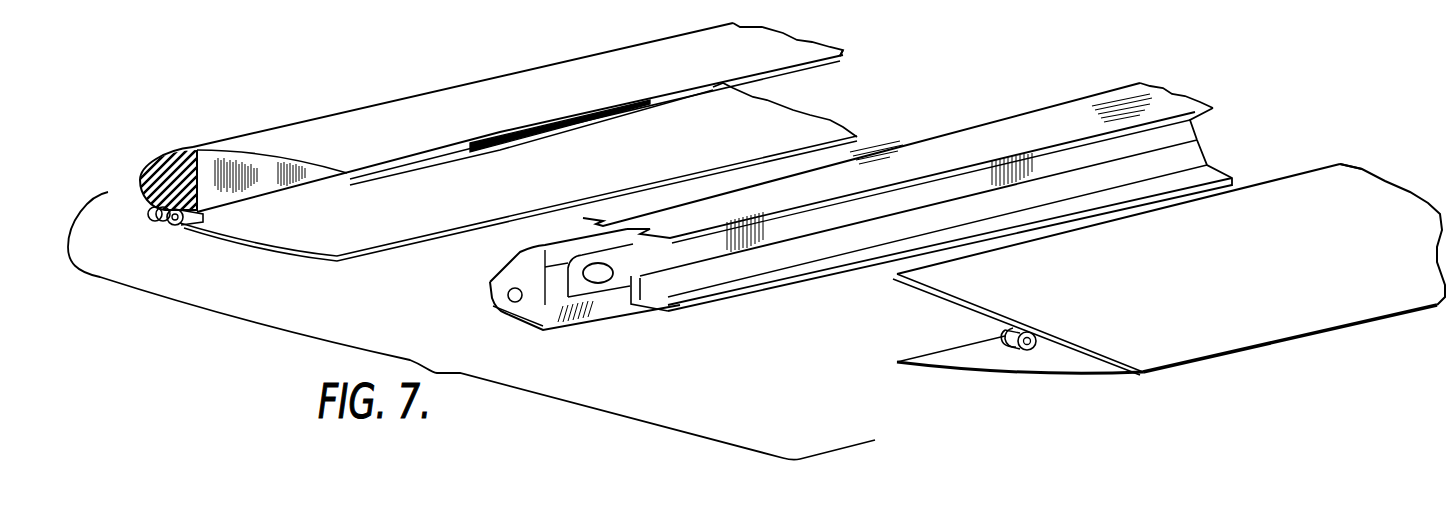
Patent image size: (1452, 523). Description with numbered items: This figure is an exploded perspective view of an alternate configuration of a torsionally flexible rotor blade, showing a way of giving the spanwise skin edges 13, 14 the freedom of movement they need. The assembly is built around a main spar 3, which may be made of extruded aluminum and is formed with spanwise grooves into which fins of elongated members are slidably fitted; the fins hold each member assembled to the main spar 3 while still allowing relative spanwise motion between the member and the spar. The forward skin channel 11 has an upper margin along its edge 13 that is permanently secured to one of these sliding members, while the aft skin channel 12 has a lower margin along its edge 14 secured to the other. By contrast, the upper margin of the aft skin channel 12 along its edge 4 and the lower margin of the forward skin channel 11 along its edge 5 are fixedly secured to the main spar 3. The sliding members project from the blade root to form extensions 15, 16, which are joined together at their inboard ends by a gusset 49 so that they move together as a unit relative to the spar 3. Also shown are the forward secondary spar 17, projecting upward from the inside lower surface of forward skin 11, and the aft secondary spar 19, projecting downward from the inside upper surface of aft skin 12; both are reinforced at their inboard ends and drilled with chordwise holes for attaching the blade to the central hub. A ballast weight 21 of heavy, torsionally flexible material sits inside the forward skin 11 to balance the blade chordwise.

The main spar 3 is at (667, 260).
The edge of aft skin channel 4 is at (1317, 170).
The edge of forward skin channel 5 is at (418, 238).
The forward skin channel 11 is at (488, 82).
The aft skin channel 12 is at (1332, 320).
The spanwise skin edge 13 is at (845, 55).
The spanwise skin edge 14 is at (897, 360).
The extension 15 is at (557, 238).
The extension 16 is at (610, 317).
The forward secondary spar 17 is at (160, 227).
The aft secondary spar 19 is at (1000, 331).
The ballast weight 21 is at (160, 153).
The gusset 49 is at (490, 298).